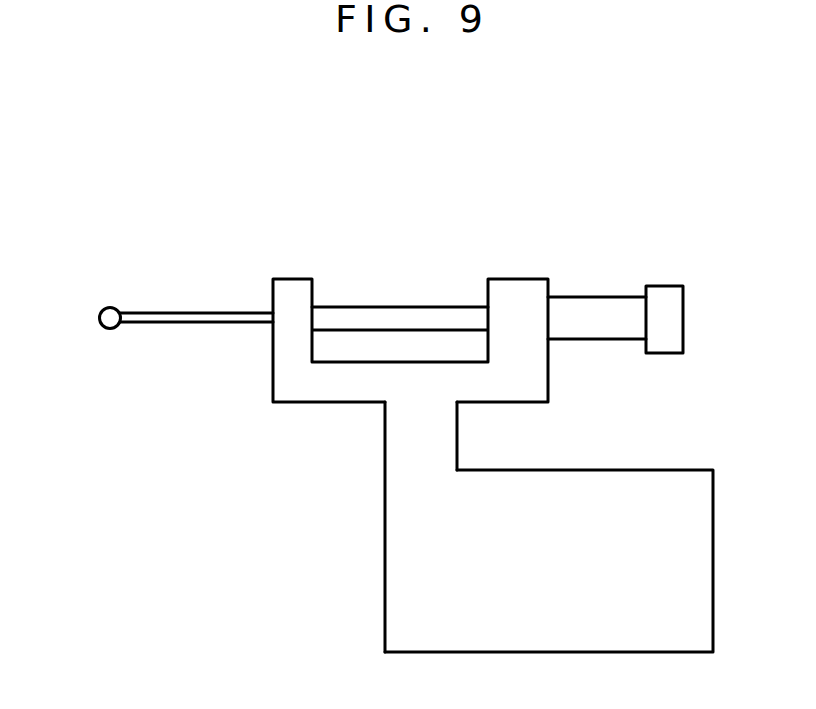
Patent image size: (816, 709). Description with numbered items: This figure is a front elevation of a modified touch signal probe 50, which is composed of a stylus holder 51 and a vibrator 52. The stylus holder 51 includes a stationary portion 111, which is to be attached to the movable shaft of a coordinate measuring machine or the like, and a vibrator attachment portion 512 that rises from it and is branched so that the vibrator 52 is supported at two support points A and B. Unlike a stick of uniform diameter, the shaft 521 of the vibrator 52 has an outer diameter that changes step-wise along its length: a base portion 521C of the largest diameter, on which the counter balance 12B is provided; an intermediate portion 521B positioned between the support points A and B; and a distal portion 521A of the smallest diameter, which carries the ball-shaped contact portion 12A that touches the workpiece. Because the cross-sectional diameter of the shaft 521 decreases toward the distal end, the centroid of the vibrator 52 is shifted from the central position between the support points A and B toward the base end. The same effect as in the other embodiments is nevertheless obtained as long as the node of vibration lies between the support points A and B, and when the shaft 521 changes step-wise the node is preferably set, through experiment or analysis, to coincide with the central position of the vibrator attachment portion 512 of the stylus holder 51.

The touch signal probe 50 is at (156, 511).
The stylus holder 51 is at (271, 477).
The vibrator attachment portion 512 is at (353, 387).
The stationary portion 111 is at (417, 608).
The vibrator 52 is at (200, 327).
The shaft 521 is at (545, 168).
The distal portion 521A is at (237, 313).
The intermediate portion 521B is at (397, 317).
The base portion 521C is at (589, 305).
The support point A is at (298, 307).
The support point B is at (512, 298).
The contact portion 12A is at (103, 315).
The counter balance 12B is at (662, 297).